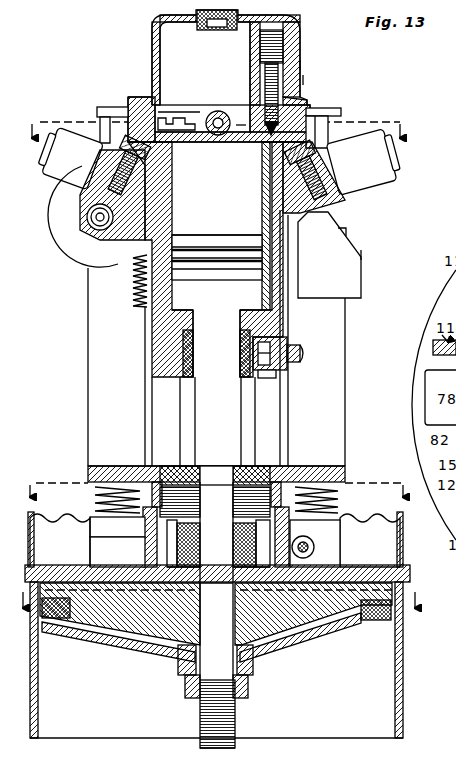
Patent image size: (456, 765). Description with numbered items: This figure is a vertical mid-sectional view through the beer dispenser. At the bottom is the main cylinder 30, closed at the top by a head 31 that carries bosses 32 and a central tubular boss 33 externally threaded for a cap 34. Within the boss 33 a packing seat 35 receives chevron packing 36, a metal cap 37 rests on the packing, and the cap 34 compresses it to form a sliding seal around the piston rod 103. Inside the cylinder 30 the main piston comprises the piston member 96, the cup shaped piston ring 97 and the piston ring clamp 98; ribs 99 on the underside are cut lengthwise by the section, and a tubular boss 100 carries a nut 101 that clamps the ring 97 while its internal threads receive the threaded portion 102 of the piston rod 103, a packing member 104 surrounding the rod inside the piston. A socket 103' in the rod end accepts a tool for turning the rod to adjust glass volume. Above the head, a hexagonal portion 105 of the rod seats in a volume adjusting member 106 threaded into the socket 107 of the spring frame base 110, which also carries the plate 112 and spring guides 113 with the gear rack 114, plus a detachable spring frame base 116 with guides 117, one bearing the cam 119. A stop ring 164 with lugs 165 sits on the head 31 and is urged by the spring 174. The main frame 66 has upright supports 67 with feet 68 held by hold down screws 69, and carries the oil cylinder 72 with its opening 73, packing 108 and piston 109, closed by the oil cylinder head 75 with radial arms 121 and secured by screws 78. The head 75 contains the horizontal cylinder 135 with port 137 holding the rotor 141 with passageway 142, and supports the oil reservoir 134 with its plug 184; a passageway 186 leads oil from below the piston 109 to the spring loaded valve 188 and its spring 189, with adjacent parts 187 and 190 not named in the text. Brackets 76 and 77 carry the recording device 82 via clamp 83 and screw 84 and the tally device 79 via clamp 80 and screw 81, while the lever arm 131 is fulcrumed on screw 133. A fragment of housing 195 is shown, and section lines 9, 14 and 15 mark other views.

The vented removable plug 184 is at (190, 12).
The oil reservoir 134 is at (163, 46).
The screw head 190 is at (285, 44).
The spring 189 is at (290, 62).
The bore 187 is at (300, 68).
The valve 188 is at (303, 82).
The port 137 is at (215, 143).
The screws 78 is at (170, 118).
The longitudinally extending passageway 142 is at (207, 110).
The horizontal cylinder 135 is at (216, 109).
The foam and fill control rotor 141 is at (240, 112).
The oil cylinder head 75 is at (248, 143).
The section line 14- 14 is at (215, 122).
The radial arms 121 is at (98, 111).
The hold down screws 69 is at (113, 119).
The clamp 80 is at (318, 114).
The screw 84 is at (105, 170).
The glass counter or tally device 79 is at (391, 173).
The recording device 82 is at (88, 212).
The bracket 76 is at (145, 186).
The clamp 83 is at (126, 162).
The bracket 77 is at (338, 200).
The screw 81 is at (328, 165).
The oil cylinder 72 is at (227, 259).
The piston 109 is at (187, 238).
The centrally positioned opening 73 is at (246, 306).
The packing member 108 is at (196, 350).
The screw 133 is at (300, 352).
The lever arm 131 is at (268, 378).
The passageway 186 is at (305, 150).
The cam 119 is at (362, 250).
The tubular spring guides 117 is at (338, 346).
The gear rack 114 is at (132, 288).
The main frame member 66 is at (156, 341).
The tubular spring guides 113 is at (97, 379).
The base portion 110 is at (117, 466).
The upright supports 67 is at (170, 436).
The base 116 is at (338, 472).
The volume adjusting member 106 is at (253, 505).
The tubular socket 107 is at (266, 478).
The hexagonal portion 105 is at (222, 478).
The shelf like plate portion 112 is at (330, 466).
The section line 9- 9 is at (215, 481).
The foot portion 68 is at (90, 521).
The tubular boss 33 is at (242, 528).
The lugs 165 is at (148, 527).
The cap 34 is at (170, 547).
The metal cap 37 is at (188, 538).
The packing 36 is at (190, 558).
The packing seat 35 is at (190, 573).
The bosses 32 is at (98, 556).
The spring 174 is at (360, 535).
The removable housing 195 is at (401, 555).
The head 31 is at (378, 567).
The main piston member 96 is at (405, 573).
The main cylinder 30 is at (390, 661).
The section line 15- 15 is at (229, 602).
The cup shaped piston ring 97 is at (396, 606).
The adjustable stop ring 164 is at (147, 583).
The ribs 99 is at (320, 628).
The piston ring clamp 98 is at (352, 622).
The nut 101 is at (252, 668).
The packing member 104 is at (205, 588).
The piston rod 103 is at (170, 685).
The tubular boss 100 is at (247, 691).
The externally threaded portion 102 is at (200, 711).
The socket 103' is at (242, 732).